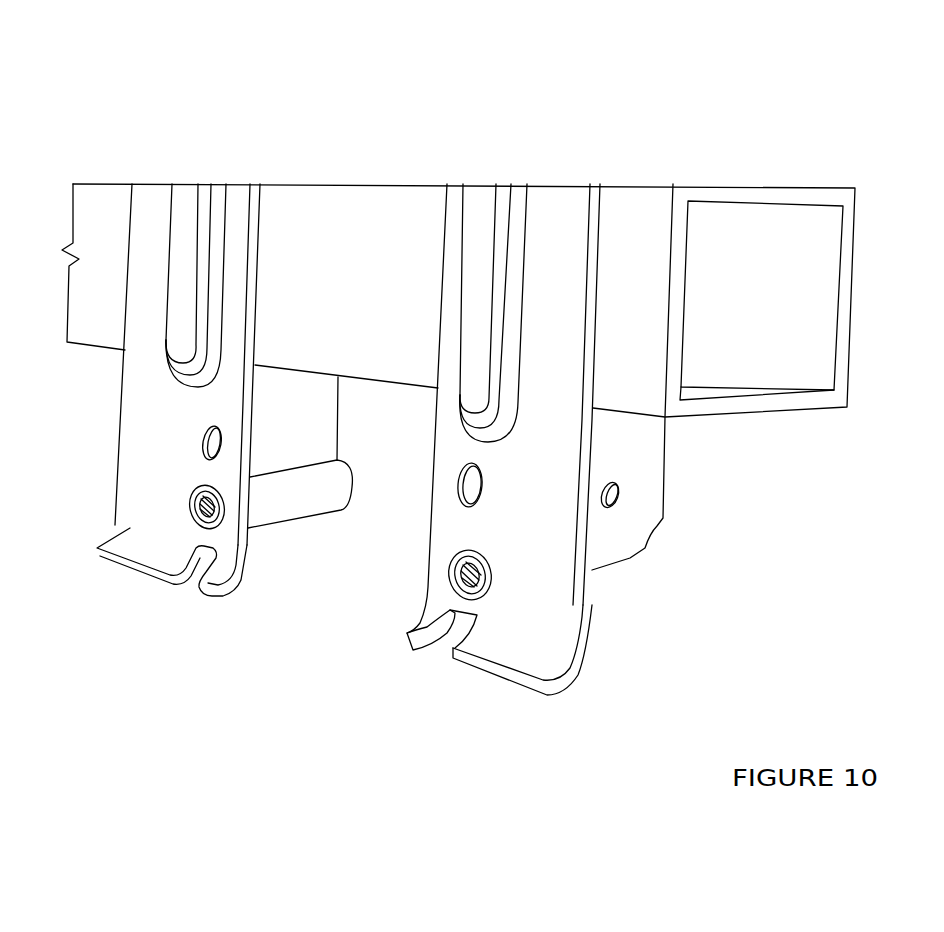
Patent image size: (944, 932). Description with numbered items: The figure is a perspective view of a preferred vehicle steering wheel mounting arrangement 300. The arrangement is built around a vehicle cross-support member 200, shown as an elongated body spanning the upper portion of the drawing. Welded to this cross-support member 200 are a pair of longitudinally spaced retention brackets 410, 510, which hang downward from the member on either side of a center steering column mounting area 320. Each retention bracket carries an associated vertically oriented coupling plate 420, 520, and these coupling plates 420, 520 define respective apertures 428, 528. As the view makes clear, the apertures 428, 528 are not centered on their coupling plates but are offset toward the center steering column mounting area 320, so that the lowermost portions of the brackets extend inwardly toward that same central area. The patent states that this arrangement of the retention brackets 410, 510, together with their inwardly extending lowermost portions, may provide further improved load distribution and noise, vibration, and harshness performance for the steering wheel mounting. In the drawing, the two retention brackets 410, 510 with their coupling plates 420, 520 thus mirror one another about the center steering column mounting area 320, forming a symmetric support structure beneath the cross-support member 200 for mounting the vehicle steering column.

The vehicle cross-support member 200 is at (313, 213).
The vehicle steering wheel mounting arrangement 300 is at (533, 93).
The center steering column mounting area 320 is at (402, 430).
The retention bracket 410 is at (618, 522).
The coupling plate 420 is at (557, 615).
The aperture 428 is at (458, 578).
The retention bracket 510 is at (290, 423).
The coupling plate 520 is at (130, 528).
The aperture 528 is at (209, 509).